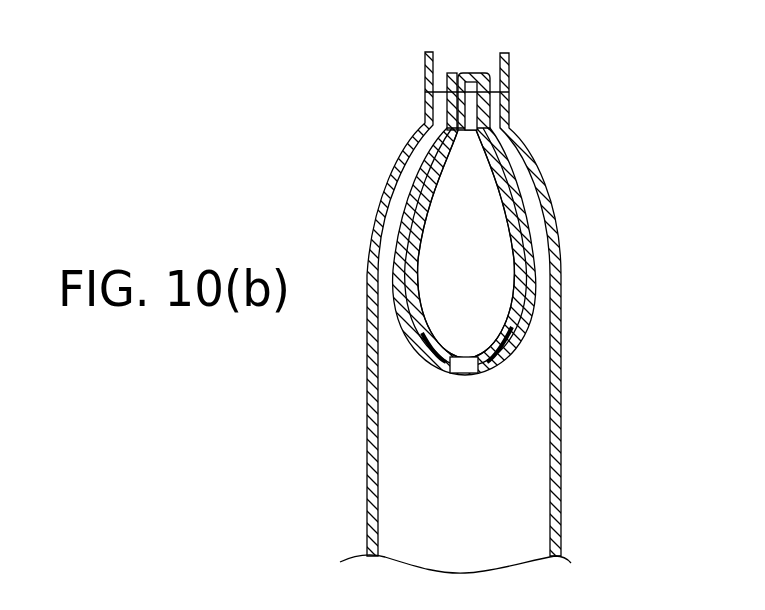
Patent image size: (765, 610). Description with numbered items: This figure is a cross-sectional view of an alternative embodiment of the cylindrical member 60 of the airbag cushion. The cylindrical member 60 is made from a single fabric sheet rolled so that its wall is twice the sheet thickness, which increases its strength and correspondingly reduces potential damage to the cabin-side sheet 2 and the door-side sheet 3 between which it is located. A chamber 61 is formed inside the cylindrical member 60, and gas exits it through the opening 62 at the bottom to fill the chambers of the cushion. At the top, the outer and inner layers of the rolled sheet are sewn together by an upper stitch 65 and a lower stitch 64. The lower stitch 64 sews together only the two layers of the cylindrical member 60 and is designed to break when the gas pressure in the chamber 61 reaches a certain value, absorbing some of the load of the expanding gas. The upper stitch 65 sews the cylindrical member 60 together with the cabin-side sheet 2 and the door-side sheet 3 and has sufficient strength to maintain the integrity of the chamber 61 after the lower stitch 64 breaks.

The cylindrical member 60 is at (505, 66).
The upper stitch 65 is at (509, 92).
The lower stitch 64 is at (447, 114).
The chamber 61 is at (483, 253).
The opening 62 is at (458, 372).
The door-side sheet 3 is at (372, 355).
The cabin-side sheet 2 is at (553, 335).